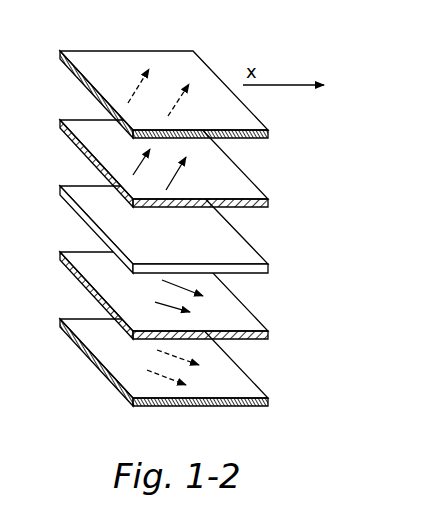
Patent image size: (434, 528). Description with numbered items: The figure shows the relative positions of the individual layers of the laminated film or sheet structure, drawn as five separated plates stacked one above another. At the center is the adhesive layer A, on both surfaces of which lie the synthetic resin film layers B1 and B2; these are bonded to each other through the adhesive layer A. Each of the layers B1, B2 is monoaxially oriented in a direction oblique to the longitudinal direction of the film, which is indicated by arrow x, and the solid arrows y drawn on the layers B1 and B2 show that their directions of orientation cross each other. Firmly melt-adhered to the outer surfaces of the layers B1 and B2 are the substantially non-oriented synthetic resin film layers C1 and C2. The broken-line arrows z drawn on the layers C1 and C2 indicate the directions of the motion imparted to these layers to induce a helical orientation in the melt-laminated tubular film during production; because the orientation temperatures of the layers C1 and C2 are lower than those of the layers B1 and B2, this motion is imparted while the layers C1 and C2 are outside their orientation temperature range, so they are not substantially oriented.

The substantially non-oriented synthetic resin film layer C1 is at (268, 131).
The monoaxially oriented synthetic resin film layer B1 is at (268, 203).
The adhesive layer A is at (268, 268).
The monoaxially oriented synthetic resin film layer B2 is at (268, 337).
The substantially non-oriented synthetic resin film layer C2 is at (268, 405).